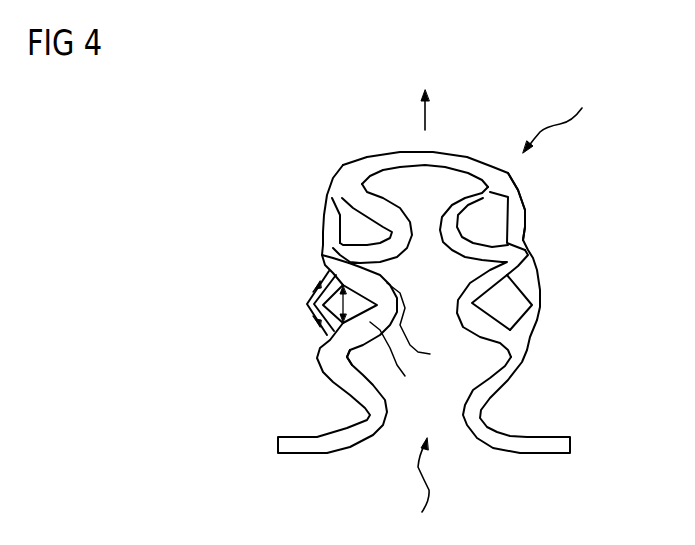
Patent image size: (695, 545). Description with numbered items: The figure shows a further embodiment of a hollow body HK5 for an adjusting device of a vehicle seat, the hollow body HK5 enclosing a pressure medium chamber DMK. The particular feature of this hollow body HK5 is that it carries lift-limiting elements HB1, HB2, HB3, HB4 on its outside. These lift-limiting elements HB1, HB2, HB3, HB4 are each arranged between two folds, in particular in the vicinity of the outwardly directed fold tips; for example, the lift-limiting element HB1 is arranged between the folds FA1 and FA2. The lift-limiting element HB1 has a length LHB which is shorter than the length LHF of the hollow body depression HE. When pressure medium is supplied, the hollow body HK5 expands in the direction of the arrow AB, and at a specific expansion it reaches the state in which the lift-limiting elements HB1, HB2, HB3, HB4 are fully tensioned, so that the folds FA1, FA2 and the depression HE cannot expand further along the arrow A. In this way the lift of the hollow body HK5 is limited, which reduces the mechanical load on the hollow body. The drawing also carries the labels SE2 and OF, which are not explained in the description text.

The hollow body HK5 is at (383, 165).
The arrow AB is at (427, 94).
The sealing element SE2 is at (564, 146).
The lift-limiting element HB2 is at (333, 213).
The lift-limiting element HB3 is at (515, 212).
The pressure medium chamber DMK is at (448, 263).
The fold FA2 is at (378, 272).
The length of lift-limiting element LHB is at (310, 307).
The lift-limiting element HB1 is at (327, 315).
The fold FA1 is at (377, 328).
The lift-limiting element HB4 is at (528, 312).
The length of hollow body depression LHF is at (427, 324).
The hollow body depression HE is at (398, 360).
The surface / direction OF is at (424, 489).
The arrow A is at (352, 304).